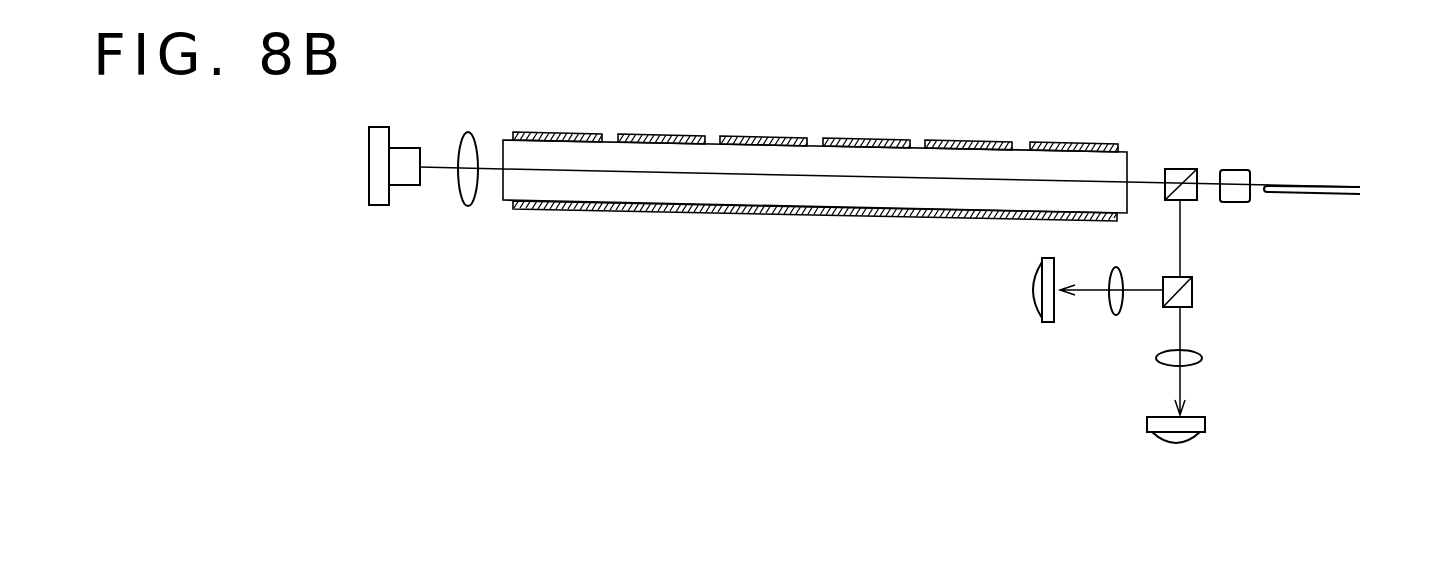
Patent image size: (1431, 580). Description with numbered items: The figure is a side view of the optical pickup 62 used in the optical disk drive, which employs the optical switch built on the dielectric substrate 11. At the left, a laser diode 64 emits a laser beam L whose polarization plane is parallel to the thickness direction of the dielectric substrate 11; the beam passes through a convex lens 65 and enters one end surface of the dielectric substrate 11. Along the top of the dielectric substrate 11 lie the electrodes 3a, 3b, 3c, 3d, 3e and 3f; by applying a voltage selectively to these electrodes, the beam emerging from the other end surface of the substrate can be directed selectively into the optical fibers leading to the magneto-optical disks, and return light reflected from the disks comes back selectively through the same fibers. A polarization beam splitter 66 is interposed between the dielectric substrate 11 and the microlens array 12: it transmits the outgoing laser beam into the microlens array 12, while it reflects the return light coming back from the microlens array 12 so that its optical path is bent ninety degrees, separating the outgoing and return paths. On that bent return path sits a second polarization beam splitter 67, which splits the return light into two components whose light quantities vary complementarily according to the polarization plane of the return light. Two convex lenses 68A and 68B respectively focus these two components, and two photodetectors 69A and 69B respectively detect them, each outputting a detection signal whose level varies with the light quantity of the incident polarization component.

The optical pickup 62 is at (588, 283).
The dielectric substrate 11 is at (760, 193).
The electrode 3a is at (562, 132).
The electrode 3b is at (663, 134).
The electrode 3c is at (765, 136).
The electrode 3d is at (862, 138).
The electrode 3e is at (968, 141).
The electrode 3f is at (1068, 143).
The laser diode 64 is at (378, 198).
The light beam L is at (432, 172).
The convex lens 65 is at (466, 200).
The polarization beam splitter 66 is at (1172, 176).
The microlens array 12 is at (1232, 180).
The polarization beam splitter 67 is at (1185, 300).
The convex lens 68A is at (1116, 300).
The photodetector 69A is at (1036, 292).
The convex lens 68B is at (1190, 362).
The photodetector 69B is at (1190, 435).